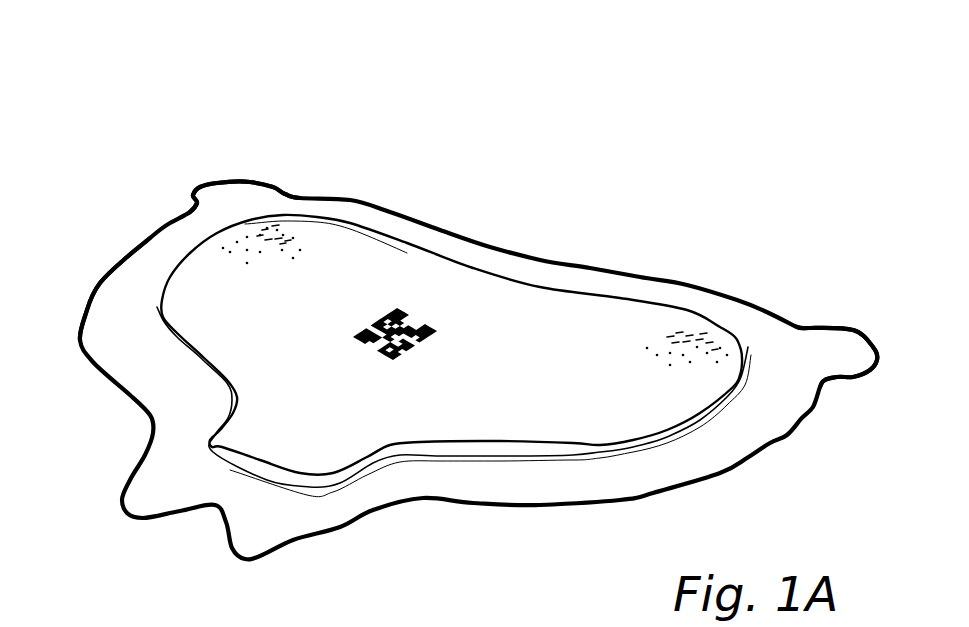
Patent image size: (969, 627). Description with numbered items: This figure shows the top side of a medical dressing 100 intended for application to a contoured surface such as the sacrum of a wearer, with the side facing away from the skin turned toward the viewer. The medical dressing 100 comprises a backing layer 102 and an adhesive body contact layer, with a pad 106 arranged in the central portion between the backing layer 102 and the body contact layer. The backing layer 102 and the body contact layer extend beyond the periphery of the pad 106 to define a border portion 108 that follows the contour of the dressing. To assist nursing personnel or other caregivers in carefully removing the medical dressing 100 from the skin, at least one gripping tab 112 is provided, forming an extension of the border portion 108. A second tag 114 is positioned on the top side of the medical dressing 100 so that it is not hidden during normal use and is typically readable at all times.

The medical dressing 100 is at (198, 95).
The backing layer 102 is at (723, 445).
The pad 106 is at (570, 350).
The border portion 108 is at (120, 353).
The gripping tab 112 is at (230, 193).
The second tag 114 is at (410, 302).